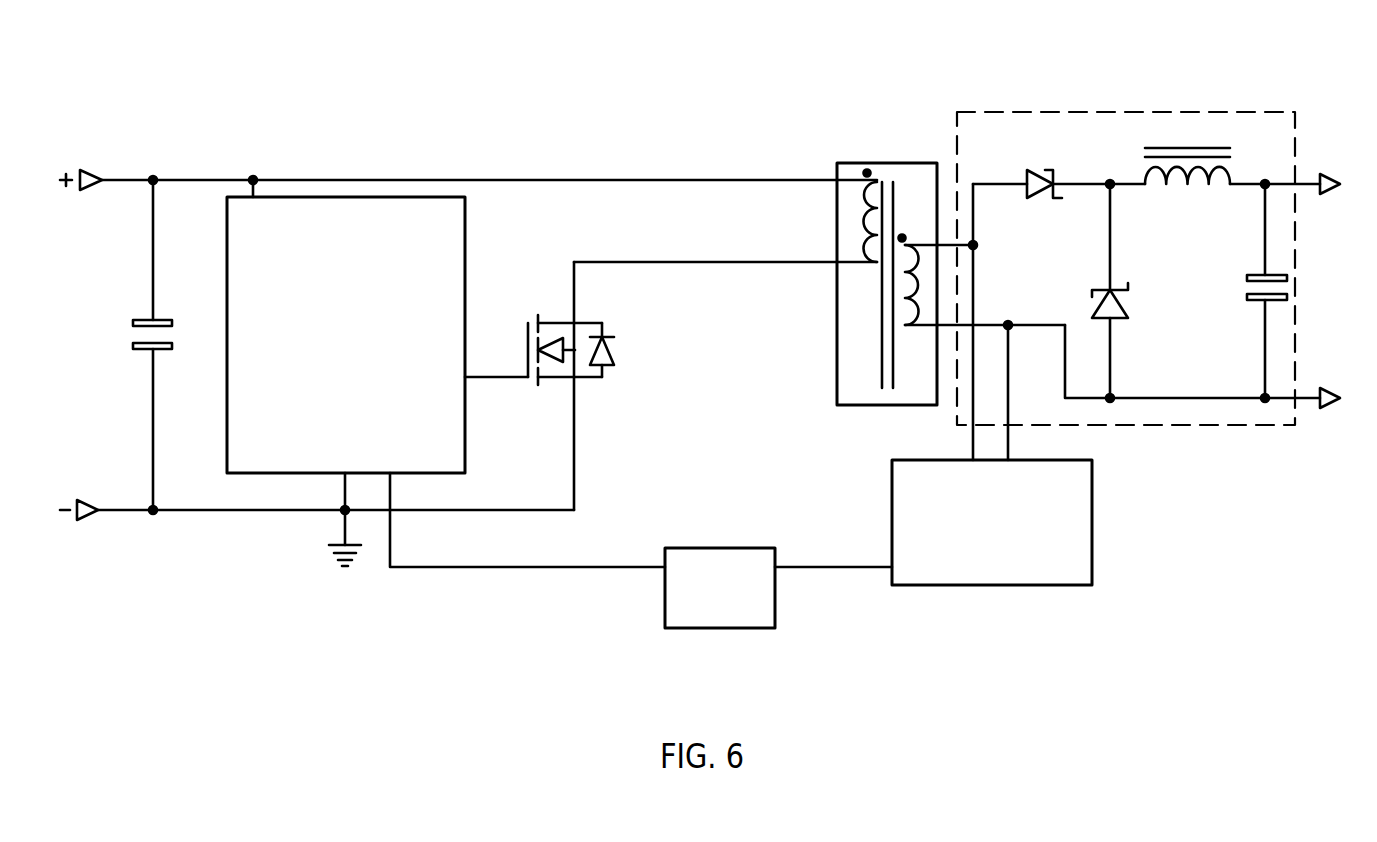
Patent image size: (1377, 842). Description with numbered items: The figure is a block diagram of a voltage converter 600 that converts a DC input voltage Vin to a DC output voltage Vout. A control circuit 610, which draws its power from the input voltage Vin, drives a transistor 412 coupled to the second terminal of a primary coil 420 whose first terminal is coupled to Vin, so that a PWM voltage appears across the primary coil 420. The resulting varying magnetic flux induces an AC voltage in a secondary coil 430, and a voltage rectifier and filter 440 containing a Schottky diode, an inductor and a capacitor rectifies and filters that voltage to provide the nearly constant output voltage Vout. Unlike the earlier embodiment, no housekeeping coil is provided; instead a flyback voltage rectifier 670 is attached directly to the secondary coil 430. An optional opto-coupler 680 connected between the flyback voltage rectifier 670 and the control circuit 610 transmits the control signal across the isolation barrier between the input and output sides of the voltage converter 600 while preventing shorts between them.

The voltage converter 600 is at (763, 92).
The control circuit 610 is at (307, 460).
The transistor 412 is at (525, 335).
The primary coil 420 is at (858, 218).
The secondary coil 430 is at (915, 246).
The voltage rectifier and filter 440 is at (1117, 117).
The flyback voltage rectifier 670 is at (930, 576).
The opto-coupler 680 is at (762, 629).